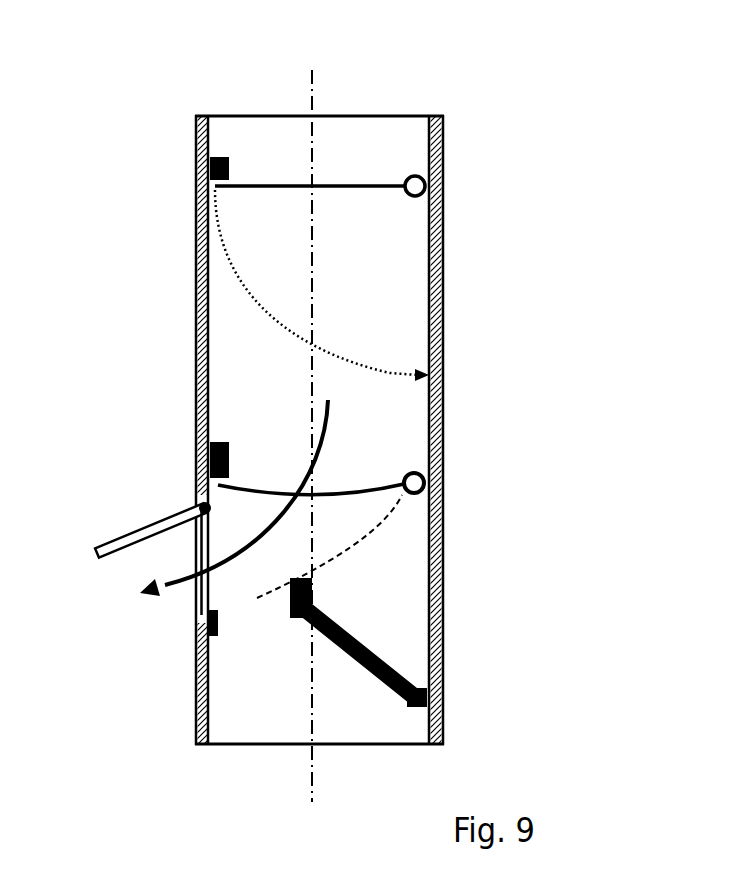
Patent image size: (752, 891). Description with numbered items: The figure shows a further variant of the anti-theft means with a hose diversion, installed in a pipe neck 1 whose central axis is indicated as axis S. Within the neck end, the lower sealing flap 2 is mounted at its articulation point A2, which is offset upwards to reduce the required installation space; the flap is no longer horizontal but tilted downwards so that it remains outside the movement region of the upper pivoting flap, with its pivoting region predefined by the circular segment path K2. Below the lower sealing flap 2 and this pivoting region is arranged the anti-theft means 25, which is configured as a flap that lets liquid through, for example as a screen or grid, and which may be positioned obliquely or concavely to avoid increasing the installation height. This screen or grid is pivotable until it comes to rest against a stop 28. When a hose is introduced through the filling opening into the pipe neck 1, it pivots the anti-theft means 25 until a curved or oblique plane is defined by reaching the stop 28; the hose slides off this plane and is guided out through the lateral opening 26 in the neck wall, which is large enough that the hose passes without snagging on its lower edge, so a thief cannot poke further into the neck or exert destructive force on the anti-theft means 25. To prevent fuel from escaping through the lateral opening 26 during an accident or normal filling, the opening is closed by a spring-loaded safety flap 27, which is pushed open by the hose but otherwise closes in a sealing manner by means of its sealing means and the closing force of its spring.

The axis of symmetry S is at (317, 97).
The pipe neck 1 is at (443, 460).
The lower sealing flap 2 is at (367, 188).
The articulation point of the lower sealing flap A2 is at (443, 192).
The circular segment path K2 is at (250, 295).
The anti-theft means 25 is at (347, 552).
The lateral opening 26 is at (195, 606).
The safety flap 27 is at (140, 538).
The stop 28 is at (290, 615).